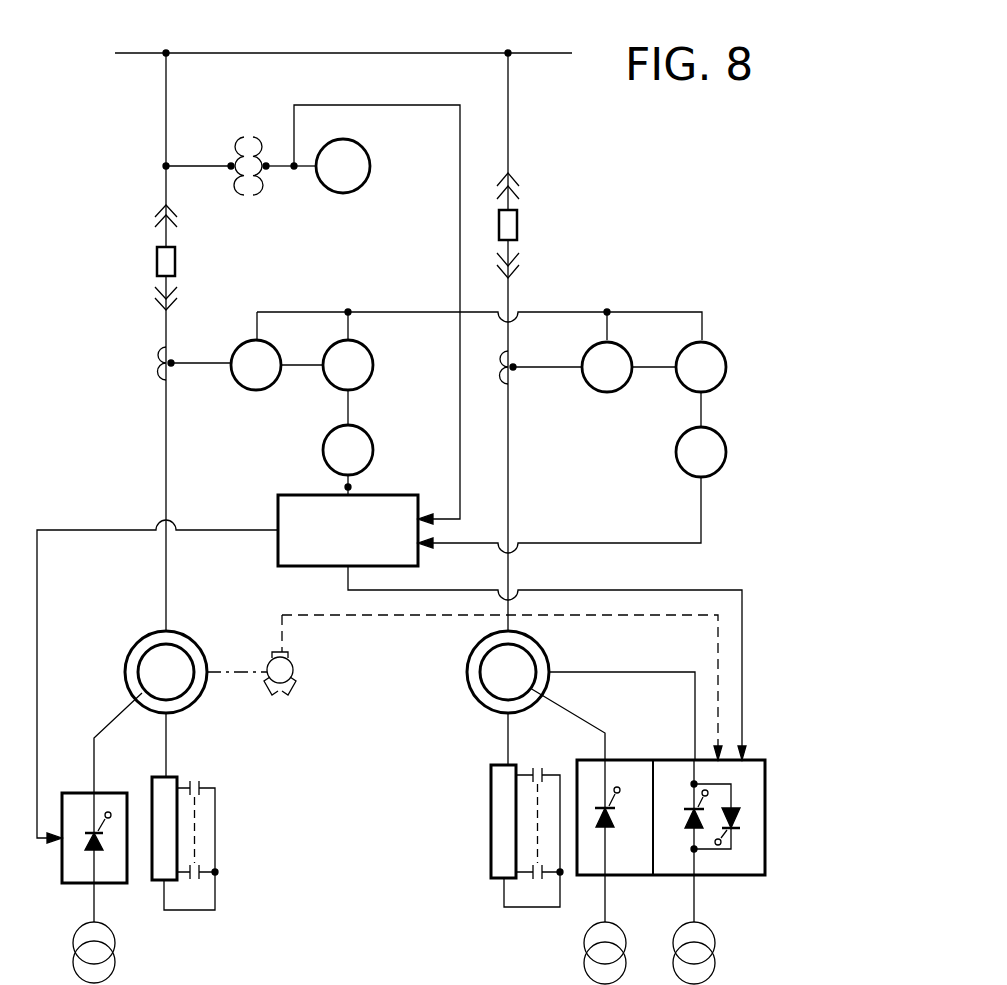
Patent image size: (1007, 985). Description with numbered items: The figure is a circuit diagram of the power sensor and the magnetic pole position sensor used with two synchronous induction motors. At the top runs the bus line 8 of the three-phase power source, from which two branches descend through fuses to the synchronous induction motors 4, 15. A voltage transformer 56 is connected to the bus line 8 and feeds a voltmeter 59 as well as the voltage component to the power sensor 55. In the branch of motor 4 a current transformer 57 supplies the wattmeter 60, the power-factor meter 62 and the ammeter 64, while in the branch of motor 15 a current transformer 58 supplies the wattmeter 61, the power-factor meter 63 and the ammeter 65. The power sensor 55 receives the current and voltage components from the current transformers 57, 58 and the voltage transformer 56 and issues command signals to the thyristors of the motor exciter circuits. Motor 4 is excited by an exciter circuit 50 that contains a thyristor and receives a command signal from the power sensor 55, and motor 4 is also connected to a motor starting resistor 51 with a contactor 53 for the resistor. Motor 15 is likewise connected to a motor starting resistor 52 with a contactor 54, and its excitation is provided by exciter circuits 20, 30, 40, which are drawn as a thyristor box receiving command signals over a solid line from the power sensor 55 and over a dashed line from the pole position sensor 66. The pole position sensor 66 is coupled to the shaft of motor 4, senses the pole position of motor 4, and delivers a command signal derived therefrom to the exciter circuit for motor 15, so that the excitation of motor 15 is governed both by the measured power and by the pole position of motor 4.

The bus line 8 is at (560, 53).
The voltage transformer 56 is at (247, 195).
The voltmeter 59 is at (370, 166).
The current transformer 57 is at (157, 367).
The current transformer 58 is at (513, 375).
The wattmeter 60 is at (255, 390).
The wattmeter 61 is at (606, 392).
The power-factor meter 62 is at (373, 365).
The power-factor meter 63 is at (726, 367).
The ammeter 64 is at (373, 450).
The ammeter 65 is at (726, 452).
The power sensor 55 is at (278, 551).
The synchronous induction motor 4 is at (124, 655).
The synchronous induction motor 15 is at (467, 672).
The pole position sensor 66 is at (280, 684).
The exciter circuit 50 is at (62, 873).
The motor starting resistor 51 is at (155, 777).
The contactor 53 is at (193, 781).
The motor starting resistor 52 is at (491, 805).
The contactor 54 is at (538, 765).
The exciter circuit 30 is at (638, 785).
The exciter circuit 40 is at (633, 760).
The exciter circuit 20 is at (706, 785).